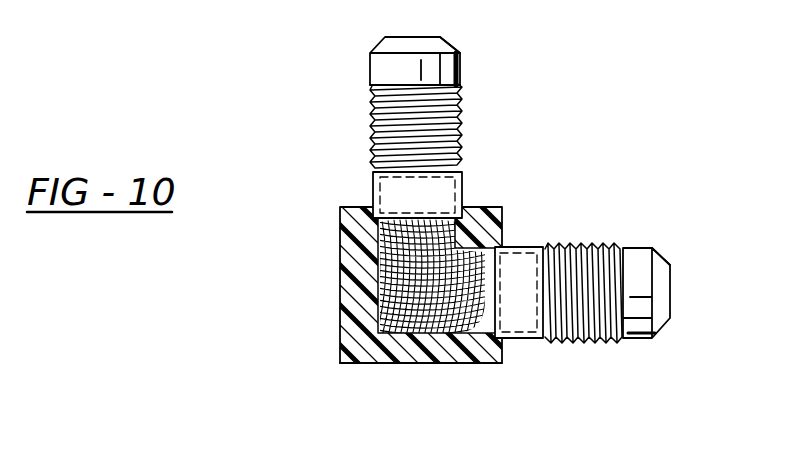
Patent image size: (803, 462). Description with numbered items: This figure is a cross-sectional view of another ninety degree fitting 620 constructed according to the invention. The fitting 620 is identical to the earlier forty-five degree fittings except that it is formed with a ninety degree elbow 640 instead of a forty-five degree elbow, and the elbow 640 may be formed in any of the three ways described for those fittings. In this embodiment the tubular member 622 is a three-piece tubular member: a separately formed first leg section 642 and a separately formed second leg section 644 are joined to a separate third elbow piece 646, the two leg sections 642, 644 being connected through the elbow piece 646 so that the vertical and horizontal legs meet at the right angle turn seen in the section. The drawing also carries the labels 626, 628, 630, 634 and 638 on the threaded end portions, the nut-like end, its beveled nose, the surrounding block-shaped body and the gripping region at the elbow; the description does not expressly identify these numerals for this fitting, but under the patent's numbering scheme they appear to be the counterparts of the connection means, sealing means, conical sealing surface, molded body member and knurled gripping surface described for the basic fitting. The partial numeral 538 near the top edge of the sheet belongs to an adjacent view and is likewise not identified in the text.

The reference numeral (adjacent figure) 538 is at (148, 0).
The fitting 620 is at (562, 176).
The tubular member 622 is at (368, 188).
The threads 626 is at (370, 128).
The nut 628 is at (372, 46).
The chamfer 630 is at (456, 46).
The elbow body block 634 is at (340, 273).
The passage 638 is at (385, 365).
The 90 degree elbow 640 is at (395, 340).
The first leg section 642 is at (465, 81).
The second leg section 644 is at (633, 247).
The third elbow piece 646 is at (466, 365).